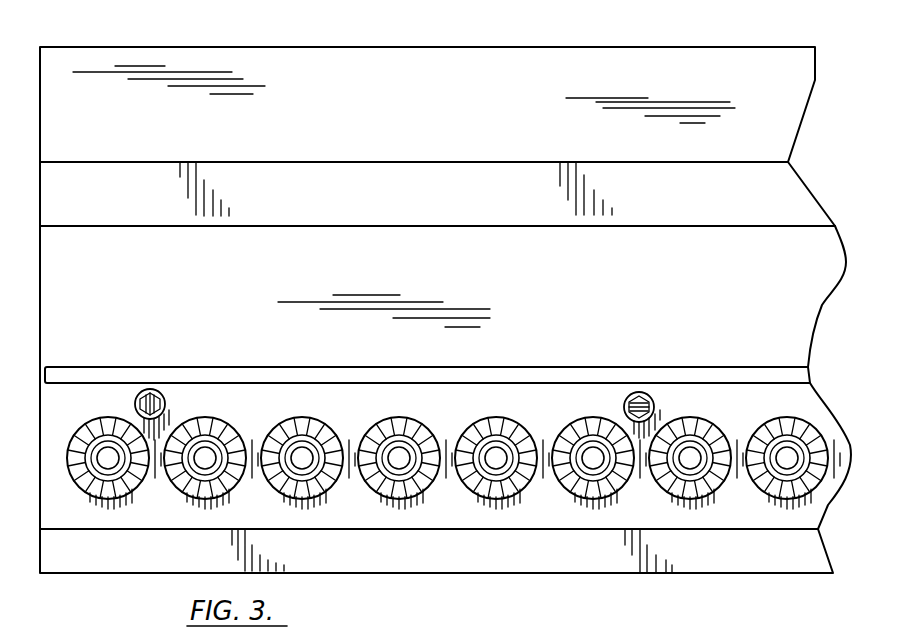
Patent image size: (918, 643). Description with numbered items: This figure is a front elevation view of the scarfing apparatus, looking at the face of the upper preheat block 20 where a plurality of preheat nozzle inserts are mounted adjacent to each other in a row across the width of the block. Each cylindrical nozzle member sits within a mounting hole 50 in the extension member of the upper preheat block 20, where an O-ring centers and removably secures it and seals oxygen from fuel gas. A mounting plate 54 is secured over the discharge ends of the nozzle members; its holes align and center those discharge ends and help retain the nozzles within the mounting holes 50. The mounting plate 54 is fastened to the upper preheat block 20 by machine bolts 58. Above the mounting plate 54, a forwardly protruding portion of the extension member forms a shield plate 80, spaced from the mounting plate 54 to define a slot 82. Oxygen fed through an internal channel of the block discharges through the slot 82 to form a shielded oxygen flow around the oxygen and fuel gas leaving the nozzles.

The upper preheat block 20 is at (545, 48).
The mounting hole 50 is at (226, 419).
The mounting plate 54 is at (746, 521).
The machine bolt 58 is at (163, 398).
The shield plate 80 is at (628, 289).
The slot 82 is at (463, 374).